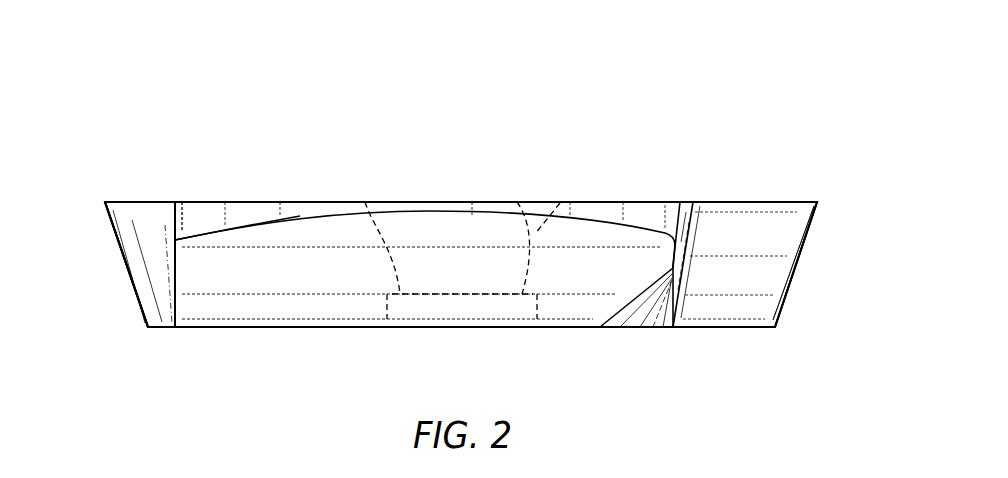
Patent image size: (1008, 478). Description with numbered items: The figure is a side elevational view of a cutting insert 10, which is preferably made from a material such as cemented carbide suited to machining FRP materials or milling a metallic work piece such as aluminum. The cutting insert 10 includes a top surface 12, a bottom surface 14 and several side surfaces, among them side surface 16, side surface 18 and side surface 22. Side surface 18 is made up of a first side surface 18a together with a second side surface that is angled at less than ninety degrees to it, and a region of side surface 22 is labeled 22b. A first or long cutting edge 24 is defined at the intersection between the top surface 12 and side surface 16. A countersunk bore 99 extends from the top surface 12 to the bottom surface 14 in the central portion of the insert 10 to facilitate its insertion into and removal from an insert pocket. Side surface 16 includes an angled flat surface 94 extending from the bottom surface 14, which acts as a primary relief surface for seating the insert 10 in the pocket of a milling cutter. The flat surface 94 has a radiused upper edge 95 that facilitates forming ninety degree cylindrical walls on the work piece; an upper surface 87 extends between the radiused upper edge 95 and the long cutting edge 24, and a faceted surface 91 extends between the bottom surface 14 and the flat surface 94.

The cutting insert 10 is at (92, 134).
The top surface 12 is at (302, 193).
The bottom surface 14 is at (335, 333).
The side surface 16 is at (567, 311).
The side surface 18 is at (818, 253).
The first side surface 18a is at (742, 276).
The side surface 22 is at (106, 264).
The left side panel edge 22b is at (148, 288).
The long cutting edge 24 is at (638, 202).
The upper surface 87 is at (207, 217).
The faceted surface 91 is at (658, 308).
The angled flat surface 94 is at (240, 285).
The radiused upper edge 95 is at (263, 222).
The countersunk bore 99 is at (535, 236).